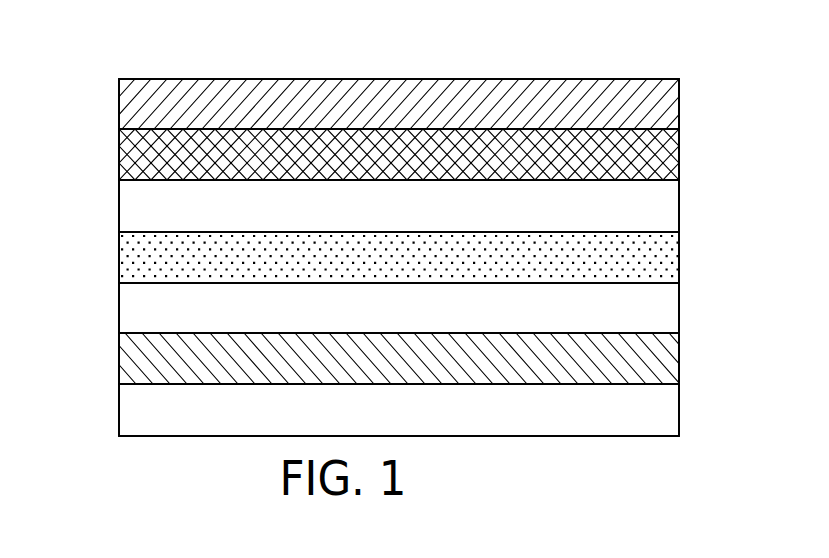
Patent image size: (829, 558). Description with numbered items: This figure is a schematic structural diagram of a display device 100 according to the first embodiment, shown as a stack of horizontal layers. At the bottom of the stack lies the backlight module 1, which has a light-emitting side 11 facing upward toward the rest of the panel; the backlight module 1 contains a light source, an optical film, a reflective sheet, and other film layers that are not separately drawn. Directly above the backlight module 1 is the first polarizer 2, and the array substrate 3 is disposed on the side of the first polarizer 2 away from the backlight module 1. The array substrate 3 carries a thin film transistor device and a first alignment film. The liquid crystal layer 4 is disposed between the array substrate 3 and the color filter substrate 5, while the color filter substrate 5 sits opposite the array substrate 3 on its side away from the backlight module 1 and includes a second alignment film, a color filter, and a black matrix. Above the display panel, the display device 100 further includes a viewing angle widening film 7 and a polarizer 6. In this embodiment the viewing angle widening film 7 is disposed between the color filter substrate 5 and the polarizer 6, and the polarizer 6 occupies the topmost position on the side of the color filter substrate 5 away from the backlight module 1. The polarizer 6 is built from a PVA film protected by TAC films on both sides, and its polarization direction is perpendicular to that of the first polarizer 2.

The display device 100 is at (116, 47).
The backlight module 1 is at (679, 408).
The first polarizer 2 is at (679, 358).
The array substrate 3 is at (679, 307).
The liquid crystal layer 4 is at (679, 250).
The color filter substrate 5 is at (679, 205).
The polarizer 6 is at (679, 103).
The viewing angle widening film 7 is at (679, 152).
The light-emitting side 11 is at (211, 376).